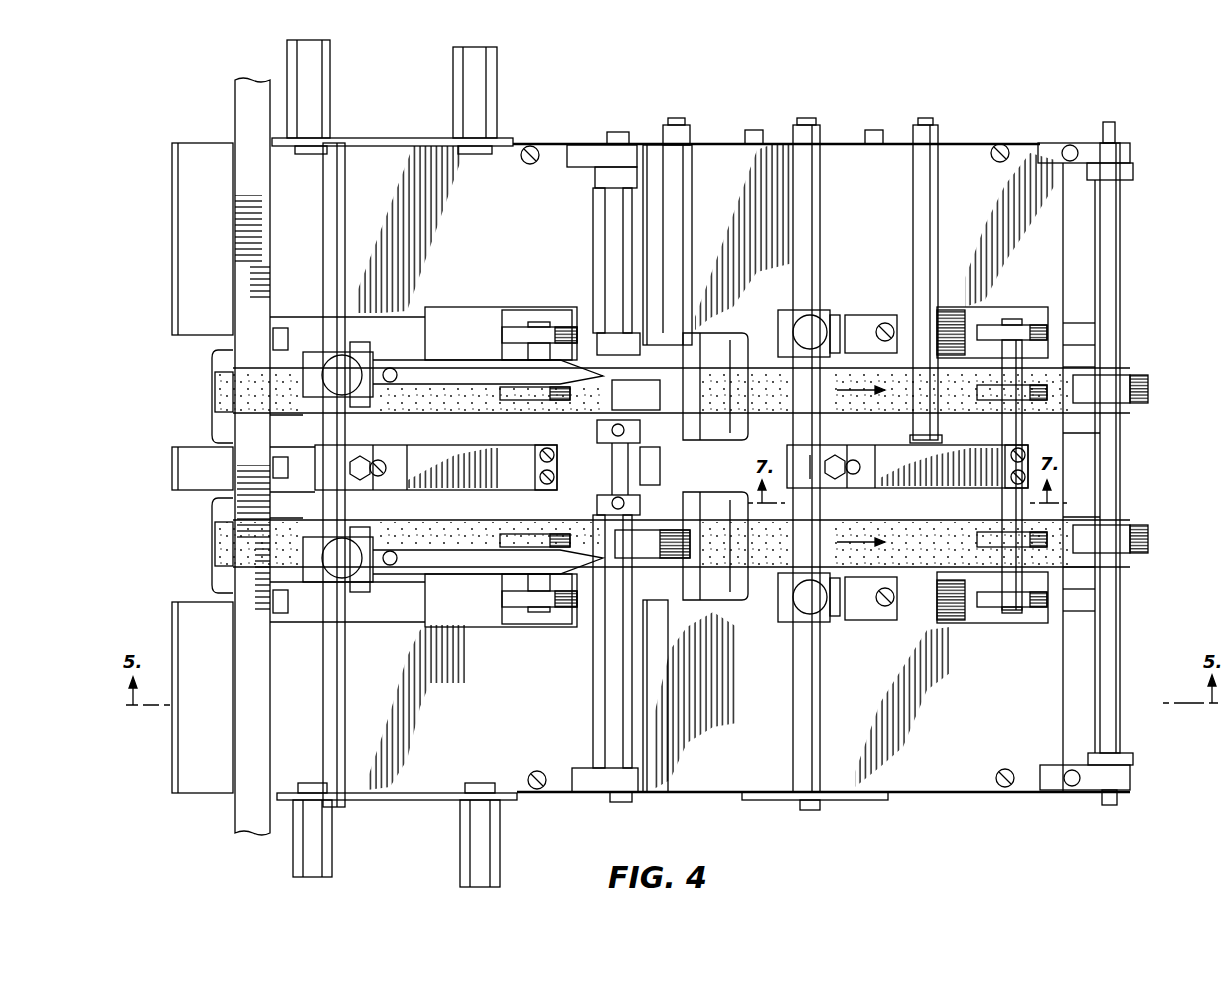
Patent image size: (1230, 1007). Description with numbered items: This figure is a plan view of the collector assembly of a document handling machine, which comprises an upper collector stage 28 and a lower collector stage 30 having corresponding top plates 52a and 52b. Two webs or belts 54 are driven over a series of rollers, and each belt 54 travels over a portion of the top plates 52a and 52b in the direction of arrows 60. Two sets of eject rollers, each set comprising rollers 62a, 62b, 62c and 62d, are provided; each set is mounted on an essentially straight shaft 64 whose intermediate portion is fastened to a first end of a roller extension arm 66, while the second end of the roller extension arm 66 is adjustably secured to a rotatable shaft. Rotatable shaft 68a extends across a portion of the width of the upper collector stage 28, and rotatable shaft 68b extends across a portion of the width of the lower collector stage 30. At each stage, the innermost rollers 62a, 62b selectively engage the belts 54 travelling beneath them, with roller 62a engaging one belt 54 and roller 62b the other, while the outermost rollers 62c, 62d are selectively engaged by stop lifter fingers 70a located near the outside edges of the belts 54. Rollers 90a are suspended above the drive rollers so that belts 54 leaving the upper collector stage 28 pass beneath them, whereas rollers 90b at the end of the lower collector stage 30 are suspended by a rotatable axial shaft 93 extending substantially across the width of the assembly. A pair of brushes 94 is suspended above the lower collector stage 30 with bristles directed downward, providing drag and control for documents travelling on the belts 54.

The upper collector stage 28 is at (426, 93).
The lower collector stage 30 is at (774, 100).
The top plate 52a is at (475, 243).
The top plate 52b is at (881, 243).
The belts 54 is at (450, 412).
The arrows 60 is at (855, 397).
The eject roller 62a is at (517, 538).
The eject roller 62b is at (514, 403).
The eject roller 62c is at (516, 610).
The eject roller 62d is at (502, 332).
The shaft 64 is at (555, 497).
The roller extension arm 66 is at (416, 446).
The rotatable shaft 68a is at (322, 428).
The rotatable shaft 68b is at (794, 428).
The stop lifter fingers 70a is at (505, 320).
The roller 90a is at (660, 388).
The roller 90b is at (1130, 392).
The rotatable axial shaft 93 is at (1110, 474).
The brushes 94 is at (956, 312).